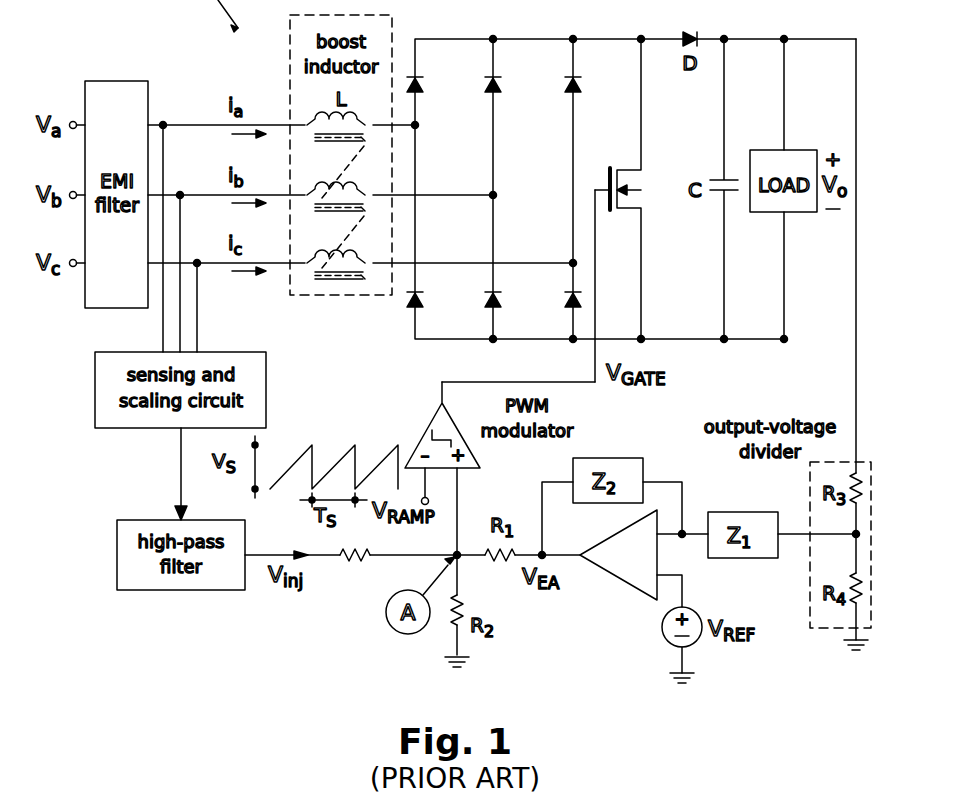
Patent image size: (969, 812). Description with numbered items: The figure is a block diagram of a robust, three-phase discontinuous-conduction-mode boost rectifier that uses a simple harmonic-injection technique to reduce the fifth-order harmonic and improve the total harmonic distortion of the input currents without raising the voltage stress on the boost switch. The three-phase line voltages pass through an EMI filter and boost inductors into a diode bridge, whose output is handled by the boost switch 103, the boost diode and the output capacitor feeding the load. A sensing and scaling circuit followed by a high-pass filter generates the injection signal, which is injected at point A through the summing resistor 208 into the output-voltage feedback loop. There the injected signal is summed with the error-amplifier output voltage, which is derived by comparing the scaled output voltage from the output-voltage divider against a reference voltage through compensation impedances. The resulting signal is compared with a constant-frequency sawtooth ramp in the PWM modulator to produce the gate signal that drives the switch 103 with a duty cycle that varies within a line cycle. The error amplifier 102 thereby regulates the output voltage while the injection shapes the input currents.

The switch 103 is at (633, 167).
The summing resistor 208 is at (358, 556).
The error amplifier 102 is at (607, 577).